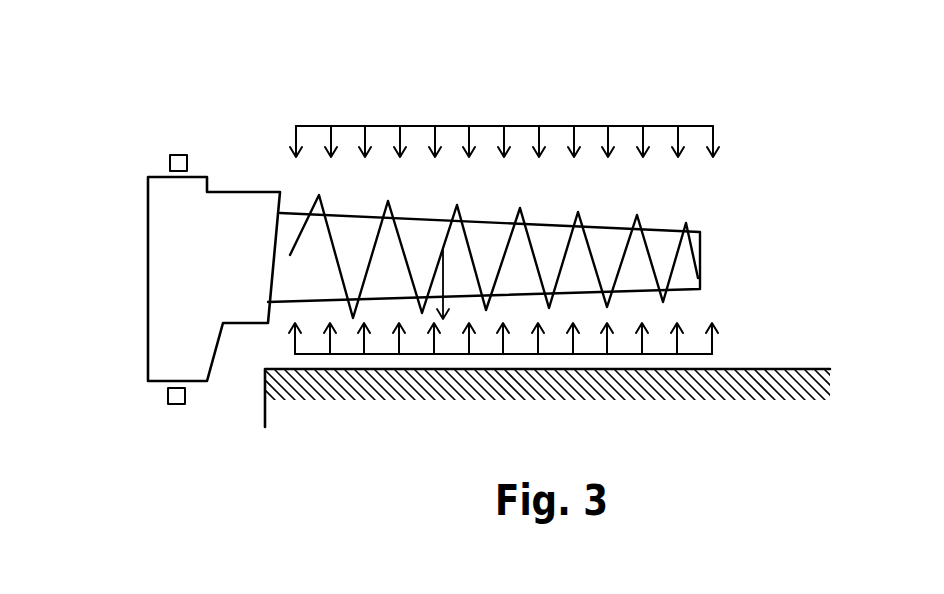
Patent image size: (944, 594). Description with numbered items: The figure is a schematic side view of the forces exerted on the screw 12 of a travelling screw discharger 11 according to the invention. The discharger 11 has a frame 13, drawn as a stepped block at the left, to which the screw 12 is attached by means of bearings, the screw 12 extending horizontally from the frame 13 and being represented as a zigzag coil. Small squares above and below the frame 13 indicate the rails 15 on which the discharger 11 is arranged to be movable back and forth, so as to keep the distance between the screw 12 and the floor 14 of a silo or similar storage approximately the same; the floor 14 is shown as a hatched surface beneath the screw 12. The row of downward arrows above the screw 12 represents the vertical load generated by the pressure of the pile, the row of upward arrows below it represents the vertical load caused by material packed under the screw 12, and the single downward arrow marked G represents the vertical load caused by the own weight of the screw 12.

The travelling discharger 11 is at (231, 97).
The screw 12 is at (680, 272).
The frame 13 is at (190, 262).
The floor 14 is at (795, 382).
The rails 15 is at (181, 162).